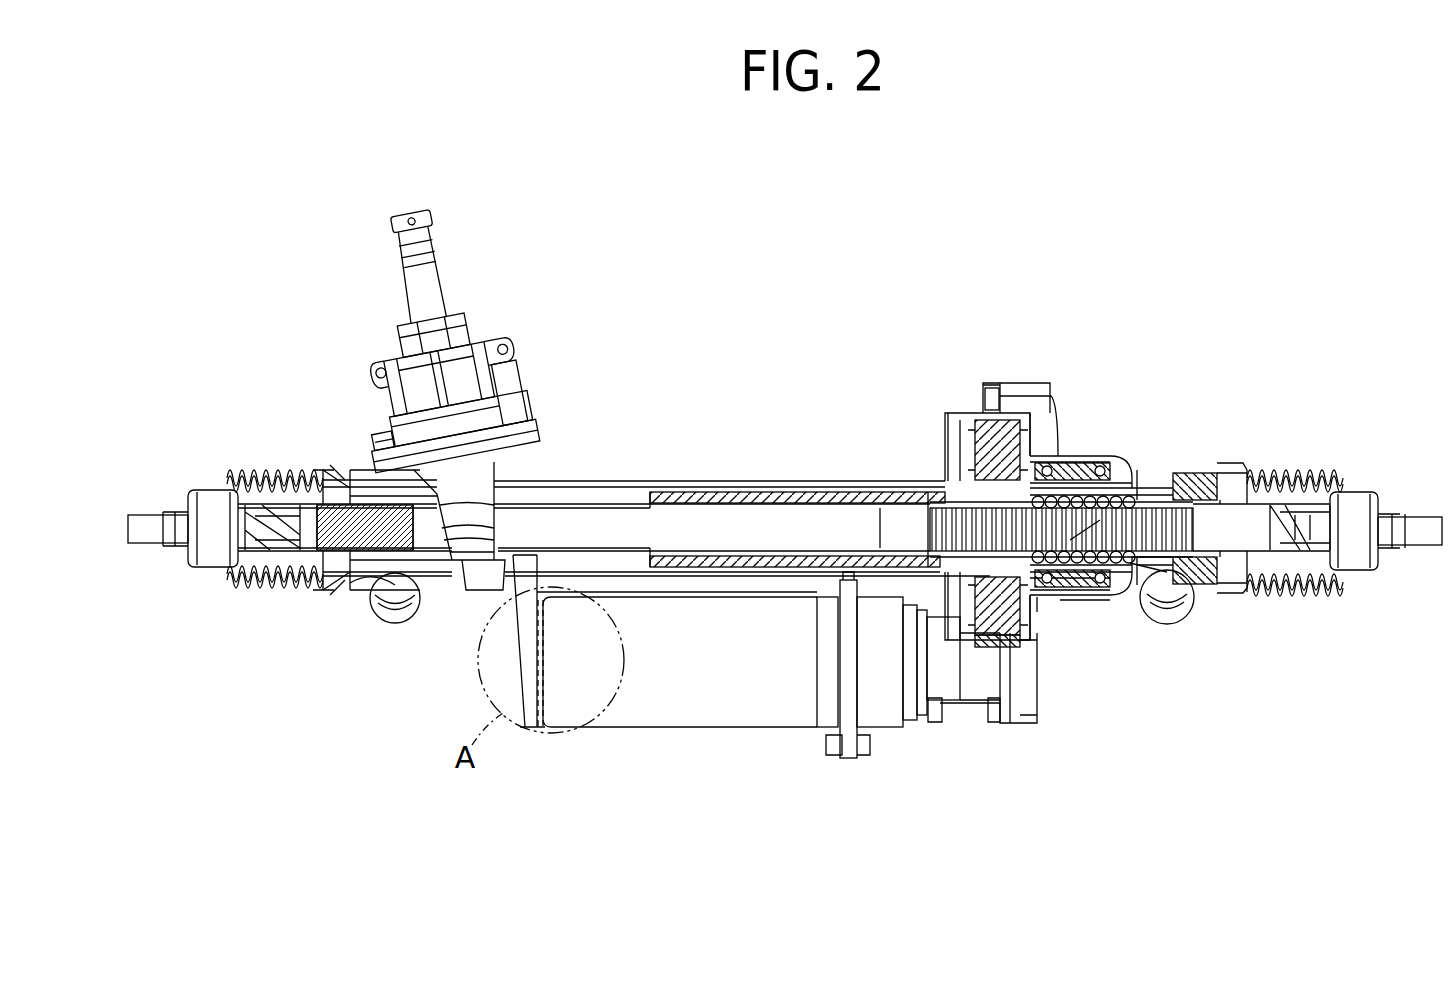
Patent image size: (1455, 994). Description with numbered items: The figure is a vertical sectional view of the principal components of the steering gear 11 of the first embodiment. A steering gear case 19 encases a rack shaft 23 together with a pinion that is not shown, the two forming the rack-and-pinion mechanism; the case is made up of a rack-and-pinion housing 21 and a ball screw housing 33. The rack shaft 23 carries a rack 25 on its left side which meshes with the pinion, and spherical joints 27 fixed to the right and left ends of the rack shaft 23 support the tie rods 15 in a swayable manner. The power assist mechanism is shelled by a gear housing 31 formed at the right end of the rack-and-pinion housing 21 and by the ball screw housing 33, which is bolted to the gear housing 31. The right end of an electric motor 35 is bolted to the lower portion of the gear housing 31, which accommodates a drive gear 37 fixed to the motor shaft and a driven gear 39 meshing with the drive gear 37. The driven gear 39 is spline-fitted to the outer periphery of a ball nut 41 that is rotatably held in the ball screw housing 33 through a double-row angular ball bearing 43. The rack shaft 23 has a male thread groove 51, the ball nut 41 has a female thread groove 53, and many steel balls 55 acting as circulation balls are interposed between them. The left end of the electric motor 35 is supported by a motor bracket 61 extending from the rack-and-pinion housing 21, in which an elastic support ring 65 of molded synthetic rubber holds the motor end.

The steering gear 11 is at (841, 272).
The tie rods 15 is at (145, 520).
The steering gear case 19 is at (810, 446).
The rack-and-pinion housing 21 is at (621, 474).
The rack shaft 23 is at (765, 496).
The rack 25 is at (355, 500).
The spherical joints 27 is at (205, 490).
The gear housing 31 is at (950, 440).
The ball screw housing 33 is at (1058, 455).
The electric motor 35 is at (735, 712).
The drive gear 37 is at (990, 642).
The driven gear 39 is at (980, 416).
The ball nut 41 is at (1120, 470).
The double-row angular ball bearing 43 is at (1075, 462).
The male thread groove 51 is at (1105, 540).
The female thread groove 53 is at (1065, 597).
The steel balls 55 is at (1090, 580).
The motor bracket 61 is at (525, 660).
The elastic support ring 65 is at (540, 730).